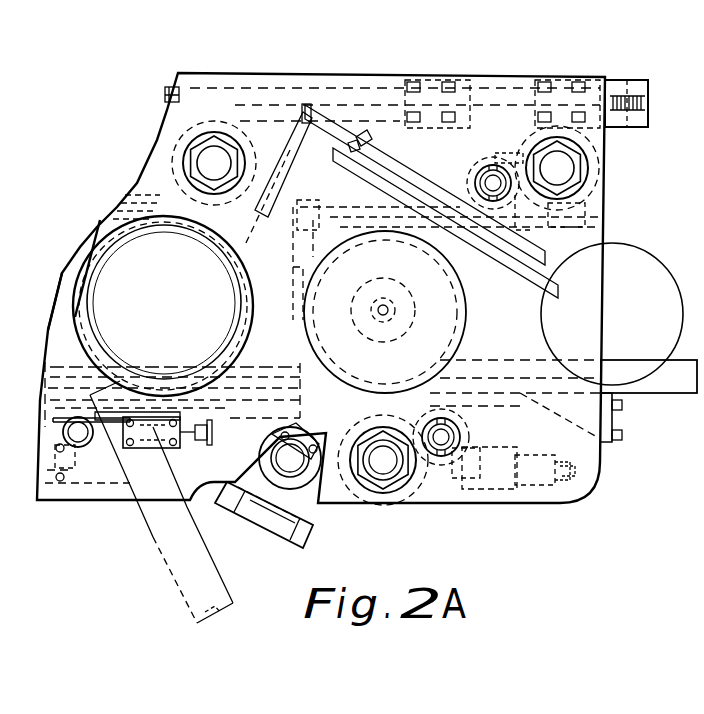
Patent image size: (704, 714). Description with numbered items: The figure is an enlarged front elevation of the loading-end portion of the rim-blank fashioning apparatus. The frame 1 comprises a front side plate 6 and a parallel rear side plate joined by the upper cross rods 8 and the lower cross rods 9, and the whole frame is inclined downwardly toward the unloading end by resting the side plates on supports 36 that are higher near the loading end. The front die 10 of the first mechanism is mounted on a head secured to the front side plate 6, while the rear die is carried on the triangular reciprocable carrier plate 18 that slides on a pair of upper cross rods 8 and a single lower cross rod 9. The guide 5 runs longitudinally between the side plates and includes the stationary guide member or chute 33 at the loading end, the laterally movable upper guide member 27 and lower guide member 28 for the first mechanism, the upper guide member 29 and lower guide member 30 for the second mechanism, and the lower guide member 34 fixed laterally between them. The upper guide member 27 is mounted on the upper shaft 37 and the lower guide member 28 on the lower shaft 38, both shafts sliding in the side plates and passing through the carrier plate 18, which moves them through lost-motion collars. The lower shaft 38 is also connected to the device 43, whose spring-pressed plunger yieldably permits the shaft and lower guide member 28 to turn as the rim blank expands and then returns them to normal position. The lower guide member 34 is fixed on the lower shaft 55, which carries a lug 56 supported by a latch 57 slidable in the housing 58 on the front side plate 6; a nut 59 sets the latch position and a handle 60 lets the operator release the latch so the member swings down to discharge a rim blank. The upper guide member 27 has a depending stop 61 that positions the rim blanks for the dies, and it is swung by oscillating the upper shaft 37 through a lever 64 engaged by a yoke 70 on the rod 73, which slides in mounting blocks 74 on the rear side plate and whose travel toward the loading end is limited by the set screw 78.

The frame 1 is at (95, 225).
The guide 5 is at (664, 395).
The front side plate 6 is at (62, 273).
The upper cross rods 8 is at (205, 153).
The lower cross rods 9 is at (383, 460).
The front die 10 is at (390, 313).
The carrier plate 18 is at (113, 258).
The upper guide member 27 is at (604, 228).
The lower guide member 28 is at (482, 408).
The upper guide member 29 is at (142, 197).
The lower guide member 30 is at (45, 380).
The guide member or chute 33 is at (688, 364).
The lower guide member 34 is at (154, 366).
The supports 36 is at (306, 538).
The upper shaft 37 is at (478, 185).
The lower shaft 38 is at (427, 432).
The device 43 is at (510, 491).
The lower shaft 55 is at (63, 433).
The lug 56 is at (53, 419).
The latch 57 is at (130, 445).
The housing 58 is at (178, 447).
The nut 59 is at (184, 420).
The handle 60 is at (212, 432).
The stop 61 is at (282, 230).
The lever 64 is at (497, 160).
The yoke 70 is at (448, 123).
The rod 73 is at (284, 80).
The mounting blocks 74 is at (572, 80).
The set screw 78 is at (651, 99).